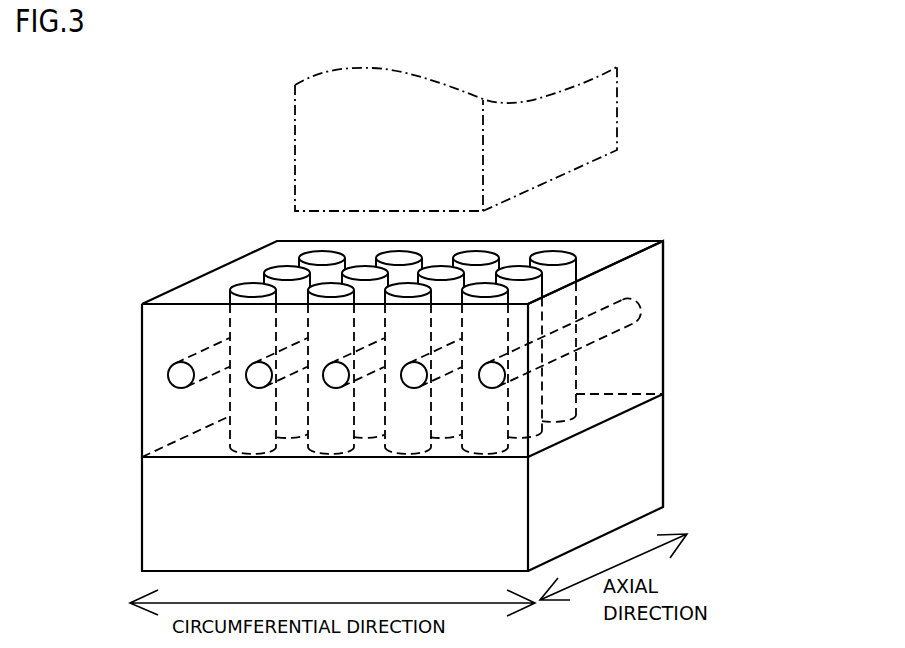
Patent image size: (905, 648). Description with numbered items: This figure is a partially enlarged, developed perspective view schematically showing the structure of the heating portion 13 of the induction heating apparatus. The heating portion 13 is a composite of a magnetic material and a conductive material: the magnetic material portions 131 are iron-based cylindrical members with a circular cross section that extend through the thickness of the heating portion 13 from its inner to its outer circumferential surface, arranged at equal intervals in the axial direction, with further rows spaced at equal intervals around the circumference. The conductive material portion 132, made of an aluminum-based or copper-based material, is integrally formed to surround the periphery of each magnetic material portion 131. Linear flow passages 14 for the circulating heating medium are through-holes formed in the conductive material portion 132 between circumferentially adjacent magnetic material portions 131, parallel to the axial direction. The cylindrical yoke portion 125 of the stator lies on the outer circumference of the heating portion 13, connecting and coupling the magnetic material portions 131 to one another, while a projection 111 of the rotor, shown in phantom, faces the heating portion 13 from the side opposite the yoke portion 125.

The projections 111 is at (568, 128).
The heating portion 13 is at (697, 291).
The magnetic material portion 131 is at (253, 288).
The conductive material portion 132 is at (155, 327).
The flow passage 14 is at (163, 388).
The yoke portion 125 is at (160, 540).